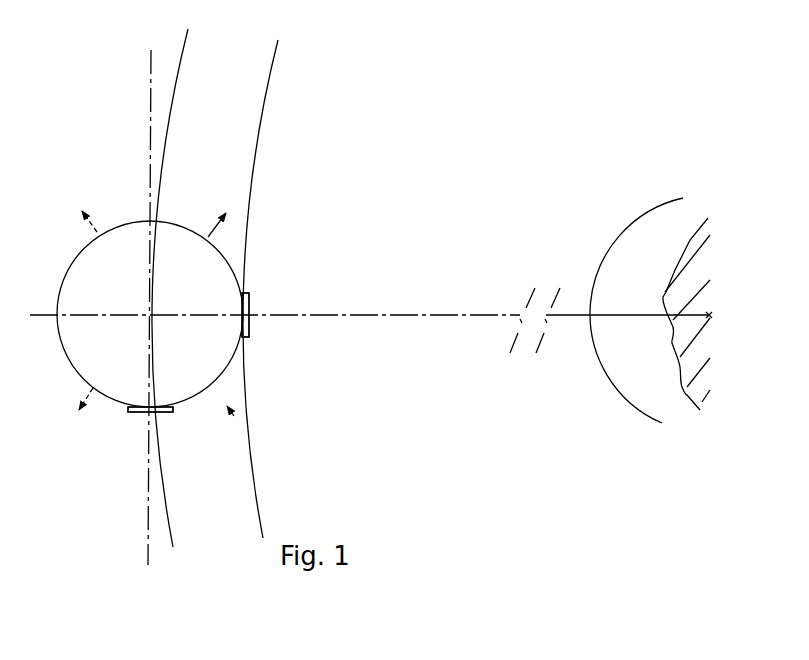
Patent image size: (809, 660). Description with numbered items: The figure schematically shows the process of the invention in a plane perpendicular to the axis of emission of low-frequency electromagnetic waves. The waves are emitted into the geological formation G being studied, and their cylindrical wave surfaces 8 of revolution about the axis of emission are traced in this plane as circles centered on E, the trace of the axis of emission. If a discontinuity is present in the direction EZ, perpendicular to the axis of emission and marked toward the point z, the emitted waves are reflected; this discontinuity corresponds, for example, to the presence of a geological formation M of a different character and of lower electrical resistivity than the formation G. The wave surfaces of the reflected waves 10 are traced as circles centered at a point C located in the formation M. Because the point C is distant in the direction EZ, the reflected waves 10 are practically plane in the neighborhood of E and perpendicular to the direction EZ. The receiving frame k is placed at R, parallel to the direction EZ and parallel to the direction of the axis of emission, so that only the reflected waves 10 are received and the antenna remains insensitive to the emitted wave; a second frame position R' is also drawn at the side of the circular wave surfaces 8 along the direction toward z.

The cylindrical wave surfaces 8 is at (218, 248).
The reflected waves 10 is at (170, 484).
The trace of the axis of emission E is at (140, 307).
The receiving frame location R is at (150, 399).
The side tangent plate R' is at (234, 315).
The receiving frame k is at (248, 305).
The geological formation G is at (398, 281).
The direction EZ endpoint z is at (559, 309).
The geological formation of different character M is at (686, 314).
The center point of reflected waves C is at (706, 308).